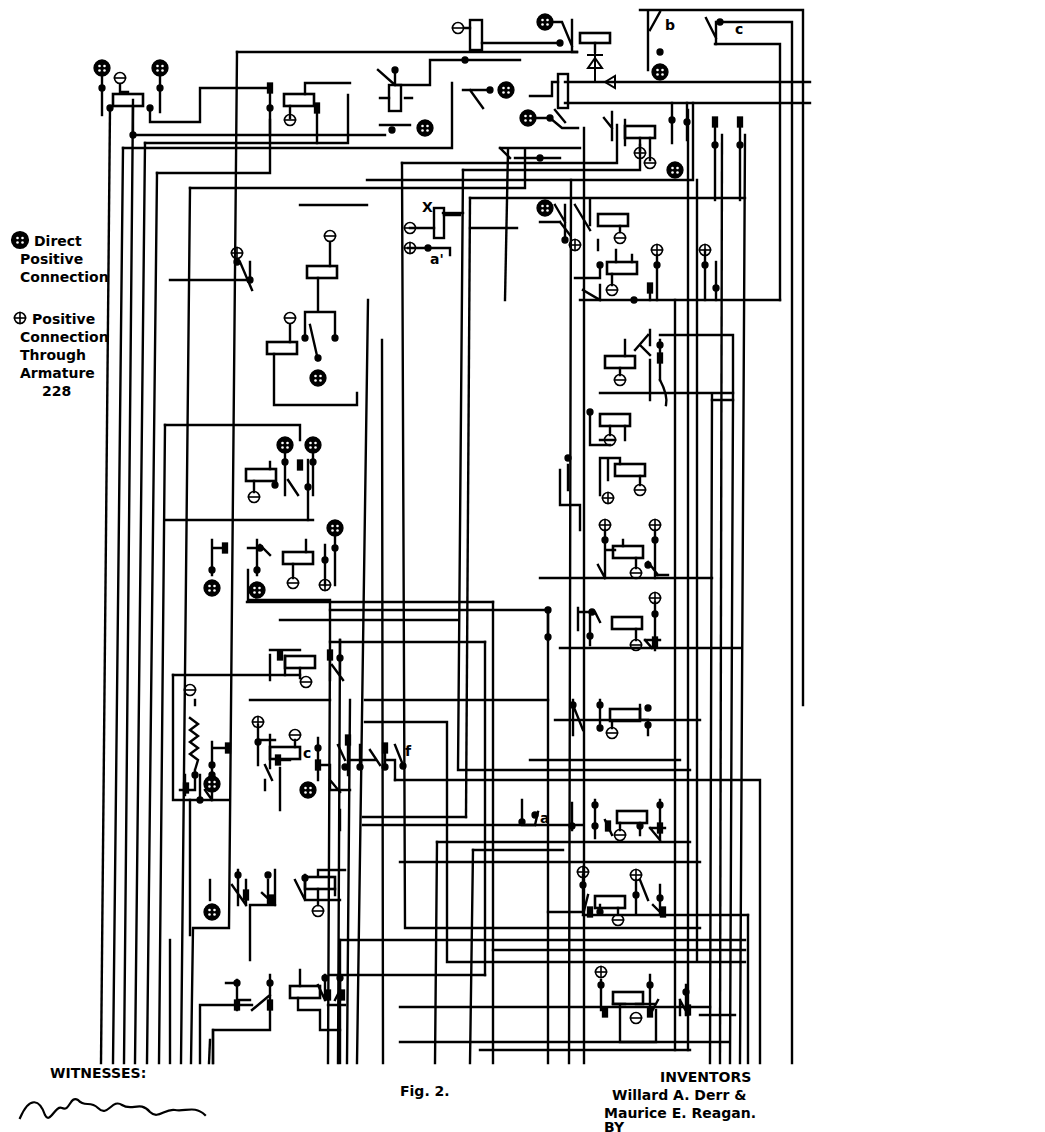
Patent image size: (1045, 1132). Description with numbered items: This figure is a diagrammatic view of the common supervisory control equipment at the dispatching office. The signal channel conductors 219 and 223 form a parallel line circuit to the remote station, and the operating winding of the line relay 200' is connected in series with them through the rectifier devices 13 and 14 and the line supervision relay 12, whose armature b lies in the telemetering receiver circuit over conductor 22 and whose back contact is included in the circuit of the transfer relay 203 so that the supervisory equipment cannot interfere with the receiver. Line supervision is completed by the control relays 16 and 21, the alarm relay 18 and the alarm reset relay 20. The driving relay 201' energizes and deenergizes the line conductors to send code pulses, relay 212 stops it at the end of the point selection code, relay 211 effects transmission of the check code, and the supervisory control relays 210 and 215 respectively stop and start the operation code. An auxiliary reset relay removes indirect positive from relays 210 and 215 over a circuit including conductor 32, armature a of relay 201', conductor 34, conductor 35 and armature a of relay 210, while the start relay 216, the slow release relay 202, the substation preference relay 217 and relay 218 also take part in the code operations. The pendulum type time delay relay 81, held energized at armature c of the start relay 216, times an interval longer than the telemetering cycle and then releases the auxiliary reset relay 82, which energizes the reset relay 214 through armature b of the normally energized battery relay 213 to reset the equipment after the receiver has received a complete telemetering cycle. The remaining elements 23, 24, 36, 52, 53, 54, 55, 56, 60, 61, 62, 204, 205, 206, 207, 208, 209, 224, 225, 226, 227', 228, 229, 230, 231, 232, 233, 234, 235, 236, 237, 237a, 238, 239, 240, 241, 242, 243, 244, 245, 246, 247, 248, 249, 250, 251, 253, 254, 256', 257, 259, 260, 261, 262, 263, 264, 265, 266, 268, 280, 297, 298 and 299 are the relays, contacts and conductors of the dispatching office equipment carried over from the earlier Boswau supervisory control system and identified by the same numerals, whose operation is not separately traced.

The line supervision relay 12 is at (610, 38).
The rectifier device 13 is at (617, 82).
The rectifier device 14 is at (604, 62).
The control relay 16 is at (470, 38).
The alarm relay 18 is at (130, 104).
The alarm reset relay 20 is at (316, 107).
The control relay 21 is at (402, 98).
The conductor 22 is at (212, 552).
The contact 23 is at (212, 752).
The contact 24 is at (200, 810).
The conductor 32 is at (460, 205).
The conductor 34 is at (398, 305).
The conductor 35 is at (430, 790).
The conductor 36 is at (430, 826).
The contact 52 is at (488, 95).
The contact 53 is at (406, 132).
The contact 54 is at (100, 97).
The contact 55 is at (160, 98).
The contact 56 is at (268, 104).
The contact 60 is at (448, 69).
The contact 61 is at (238, 242).
The contact 62 is at (569, 30).
The pendulum type time delay relay 81 is at (275, 342).
The auxiliary reset relay 82 is at (320, 309).
The line relay 200' is at (544, 87).
The driving relay 201' is at (647, 140).
The slow release relay 202 is at (628, 220).
The transfer relay 203 is at (623, 276).
The relay 204 is at (634, 351).
The relay 205 is at (630, 420).
The relay 206 is at (630, 464).
The relay 207 is at (640, 549).
The relay 208 is at (636, 622).
The relay 209 is at (610, 714).
The supervisory control relay 210 is at (617, 818).
The relay 211 is at (663, 896).
The relay 212 is at (666, 1005).
The battery relay 213 is at (281, 470).
The reset relay 214 is at (289, 586).
The supervisory control relay 215 is at (306, 662).
The start relay 216 is at (277, 749).
The substation preference relay 217 is at (320, 892).
The relay 218 is at (315, 1000).
The signal channel conductor 219 is at (755, 82).
The signal channel conductor 223 is at (755, 110).
The contact 224 is at (315, 480).
The contact 225 is at (253, 561).
The contact 226 is at (292, 498).
The contact 227' is at (548, 110).
The armature 228 is at (553, 231).
The contact 229 is at (236, 993).
The contact 230 is at (253, 884).
The conductor 231 is at (548, 624).
The contact 232 is at (607, 874).
The contact 233 is at (256, 915).
The contact 234 is at (236, 1019).
The conductor 235 is at (213, 1044).
The contact 236 is at (275, 790).
The conductor 237 is at (224, 678).
The contact 237a is at (290, 875).
The conductor 238 is at (712, 605).
The conductor 239 is at (790, 700).
The contact 240 is at (656, 707).
The contact 241 is at (340, 975).
The contact 242 is at (600, 1015).
The conductor 243 is at (367, 212).
The contact 244 is at (345, 555).
The contact 245 is at (650, 333).
The contact 246 is at (671, 273).
The contact 247 is at (575, 277).
The contact 248 is at (563, 215).
The conductor 249 is at (580, 372).
The conductor 250 is at (568, 466).
The conductor 251 is at (723, 422).
The conductor 253 is at (735, 370).
The contact 254 is at (656, 880).
The contact 256' is at (526, 149).
The conductor 257 is at (590, 413).
The conductor 259 is at (692, 672).
The contact 260 is at (713, 126).
The contact 261 is at (660, 578).
The contact 262 is at (606, 808).
The contact 263 is at (619, 685).
The contact 264 is at (584, 618).
The contact 265 is at (644, 660).
The contact 266 is at (638, 1031).
The contact 268 is at (604, 550).
The contact 280 is at (664, 383).
The contact 297 is at (383, 745).
The contact 298 is at (684, 1027).
The contact 299 is at (332, 676).